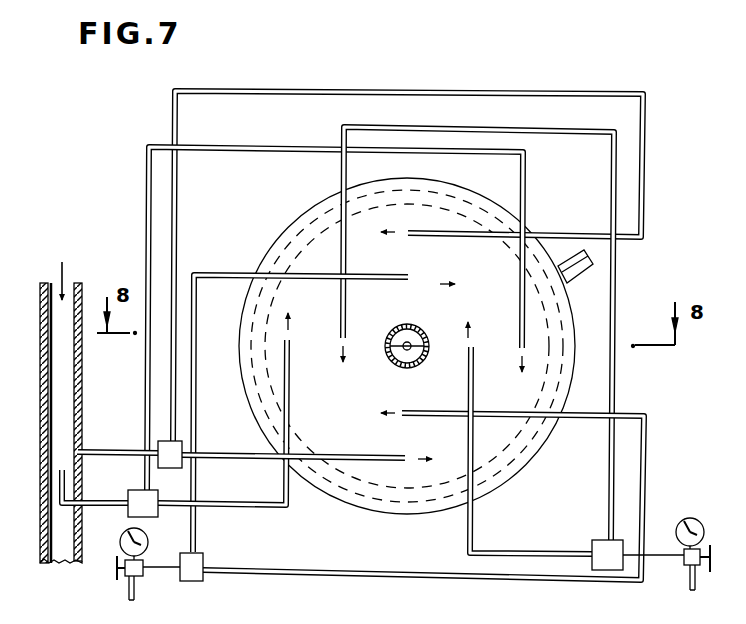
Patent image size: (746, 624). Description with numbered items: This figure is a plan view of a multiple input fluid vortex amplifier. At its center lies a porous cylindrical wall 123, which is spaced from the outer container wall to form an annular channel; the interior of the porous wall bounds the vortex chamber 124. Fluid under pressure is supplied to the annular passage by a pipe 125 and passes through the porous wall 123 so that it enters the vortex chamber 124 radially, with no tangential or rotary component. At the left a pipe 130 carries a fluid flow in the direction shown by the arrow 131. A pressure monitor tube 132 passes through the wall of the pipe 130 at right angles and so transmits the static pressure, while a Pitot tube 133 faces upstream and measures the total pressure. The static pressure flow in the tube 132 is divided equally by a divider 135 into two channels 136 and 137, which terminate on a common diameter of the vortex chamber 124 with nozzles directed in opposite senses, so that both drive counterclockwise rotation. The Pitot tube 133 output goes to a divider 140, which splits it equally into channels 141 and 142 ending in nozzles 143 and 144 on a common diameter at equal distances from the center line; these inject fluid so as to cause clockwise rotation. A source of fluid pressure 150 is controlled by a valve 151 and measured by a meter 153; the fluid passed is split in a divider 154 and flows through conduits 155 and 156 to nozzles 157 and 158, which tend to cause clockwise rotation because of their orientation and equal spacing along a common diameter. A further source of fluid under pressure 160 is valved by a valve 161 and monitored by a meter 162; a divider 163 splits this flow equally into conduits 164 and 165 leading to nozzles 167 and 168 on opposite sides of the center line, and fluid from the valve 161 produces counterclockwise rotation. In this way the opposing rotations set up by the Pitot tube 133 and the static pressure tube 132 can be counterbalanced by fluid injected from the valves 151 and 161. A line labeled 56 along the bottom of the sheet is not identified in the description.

The return conduit 56 is at (322, 583).
The porous cylindrical wall 123 is at (362, 508).
The vortex chamber 124 is at (362, 410).
The pipe 125 is at (575, 275).
The pipe 130 is at (84, 398).
The arrow 131 is at (81, 272).
The pressure monitor tube 132 is at (86, 450).
The Pitot tube 133 is at (70, 473).
The divider 135 is at (182, 465).
The channel 136 is at (428, 90).
The channel 137 is at (205, 453).
The divider 140 is at (128, 513).
The channel 141 is at (528, 207).
The channel 142 is at (276, 515).
The nozzle 143 is at (290, 340).
The nozzle 144 is at (521, 352).
The source of fluid pressure 150 is at (138, 590).
The valve 151 is at (125, 575).
The meter 153 is at (146, 543).
The divider 154 is at (205, 562).
The conduit 155 is at (197, 405).
The conduit 156 is at (648, 478).
The nozzle 157 is at (410, 285).
The nozzle 158 is at (403, 418).
The source of fluid under pressure 160 is at (696, 585).
The valve 161 is at (684, 565).
The meter 162 is at (702, 520).
The divider 163 is at (598, 572).
The conduit 164 is at (492, 127).
The conduit 165 is at (506, 552).
The nozzle 167 is at (347, 338).
The nozzle 168 is at (474, 347).